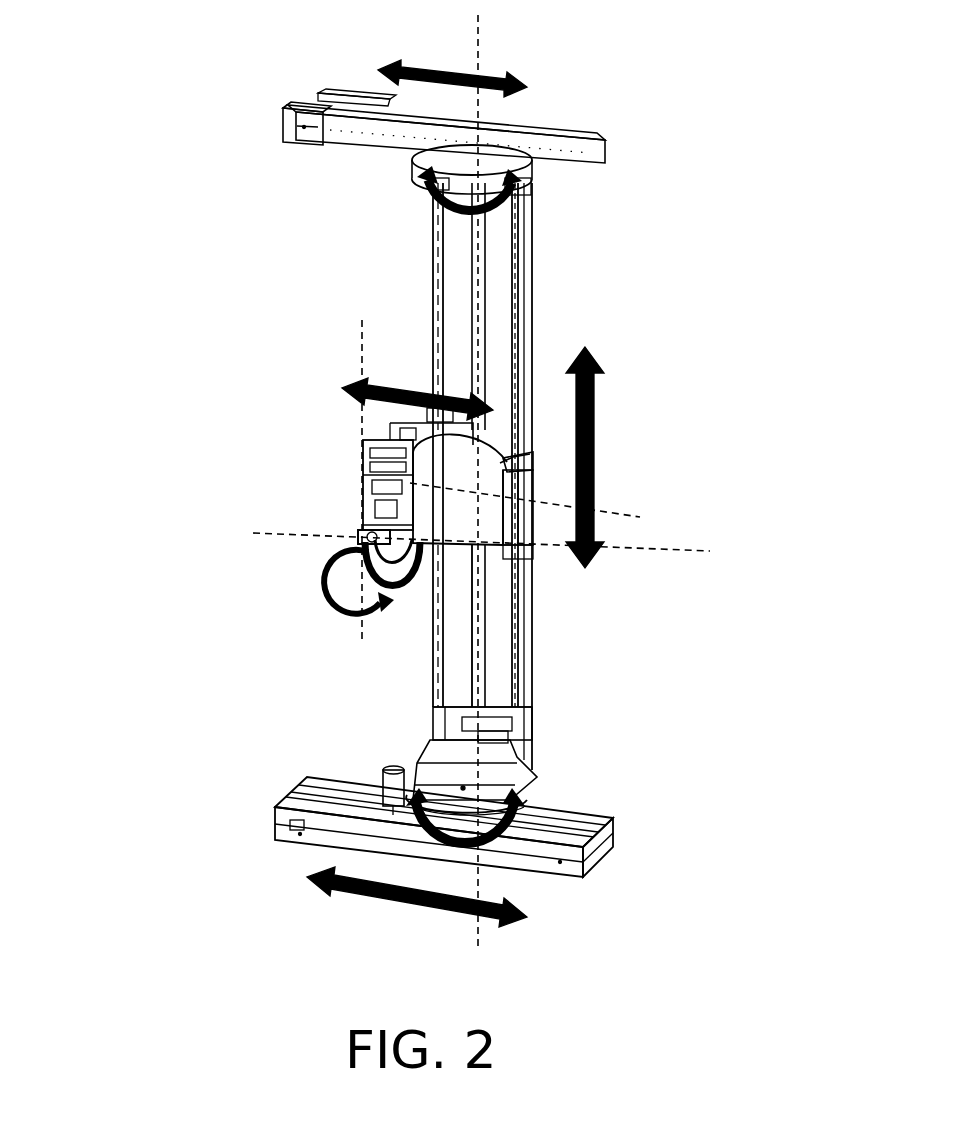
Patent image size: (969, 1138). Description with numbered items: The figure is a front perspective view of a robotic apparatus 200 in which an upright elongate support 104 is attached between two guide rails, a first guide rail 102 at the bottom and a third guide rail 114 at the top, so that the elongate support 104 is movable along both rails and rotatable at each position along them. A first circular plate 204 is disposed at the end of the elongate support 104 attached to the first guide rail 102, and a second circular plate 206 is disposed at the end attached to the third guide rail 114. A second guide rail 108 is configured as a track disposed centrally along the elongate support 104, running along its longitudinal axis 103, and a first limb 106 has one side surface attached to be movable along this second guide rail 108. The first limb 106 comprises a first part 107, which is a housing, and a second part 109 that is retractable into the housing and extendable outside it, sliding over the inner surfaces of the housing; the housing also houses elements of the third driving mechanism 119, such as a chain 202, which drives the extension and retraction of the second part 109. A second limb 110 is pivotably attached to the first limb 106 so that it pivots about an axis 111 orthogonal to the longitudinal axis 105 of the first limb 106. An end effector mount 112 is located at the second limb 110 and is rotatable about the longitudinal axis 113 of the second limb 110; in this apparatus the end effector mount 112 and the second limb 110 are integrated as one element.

The first guide rail 102 is at (270, 842).
The longitudinal axis of the elongate support 103 is at (476, 62).
The elongate support 104 is at (535, 281).
The longitudinal axis of the first limb 105 is at (620, 514).
The first limb 106 is at (520, 570).
The first part of the first limb 107 is at (527, 530).
The second guide rail 108 is at (472, 632).
The second part of the first limb 109 is at (375, 437).
The second limb 110 is at (363, 532).
The pivot axis of the second limb 111 is at (361, 352).
The end effector mount 112 is at (374, 537).
The longitudinal axis of the second limb 113 is at (650, 549).
The third guide rail 114 is at (581, 125).
The third driving mechanism 119 is at (430, 517).
The robotic apparatus 200 is at (178, 522).
The chain 202 is at (365, 490).
The first circular plate 204 is at (418, 152).
The second circular plate 206 is at (533, 790).